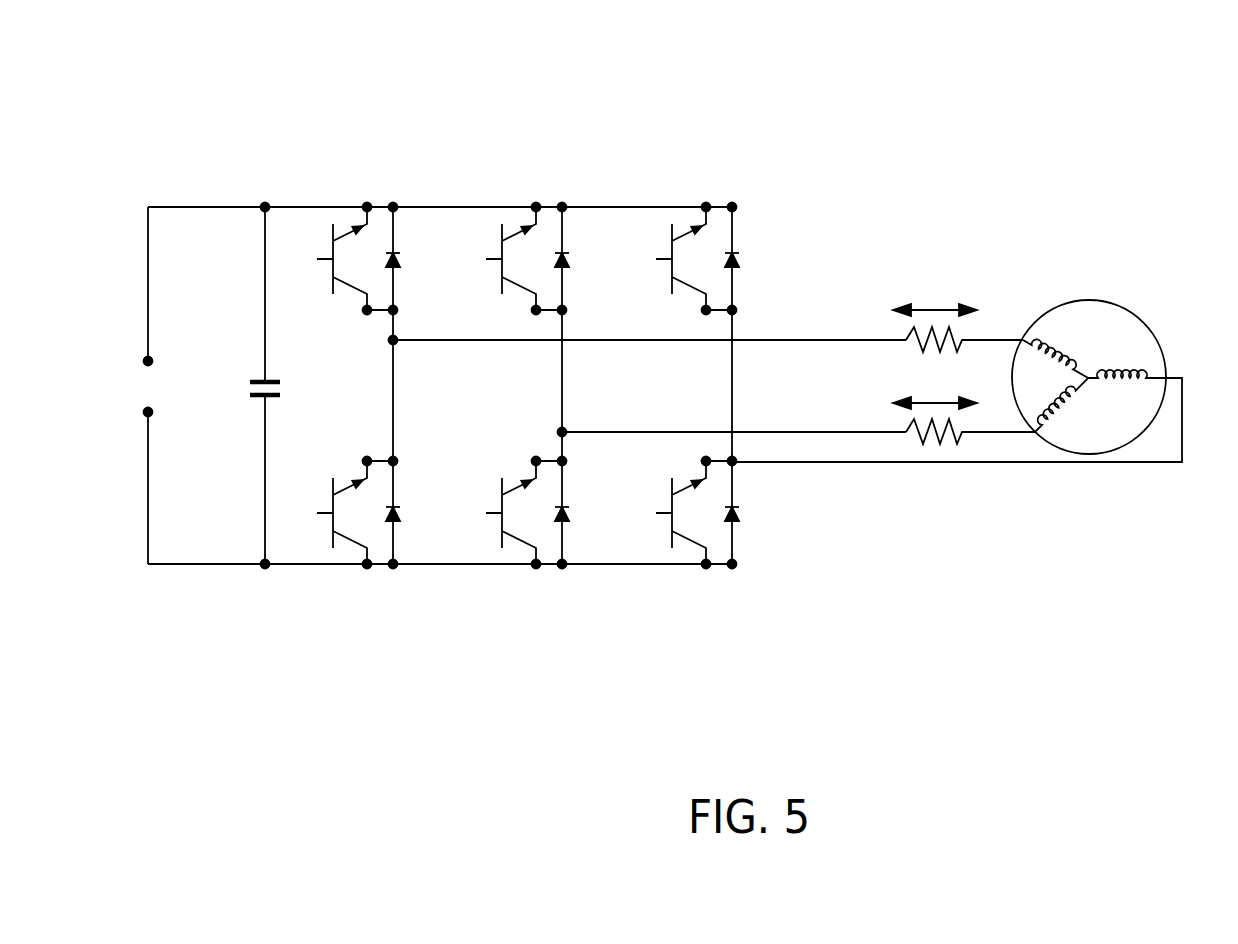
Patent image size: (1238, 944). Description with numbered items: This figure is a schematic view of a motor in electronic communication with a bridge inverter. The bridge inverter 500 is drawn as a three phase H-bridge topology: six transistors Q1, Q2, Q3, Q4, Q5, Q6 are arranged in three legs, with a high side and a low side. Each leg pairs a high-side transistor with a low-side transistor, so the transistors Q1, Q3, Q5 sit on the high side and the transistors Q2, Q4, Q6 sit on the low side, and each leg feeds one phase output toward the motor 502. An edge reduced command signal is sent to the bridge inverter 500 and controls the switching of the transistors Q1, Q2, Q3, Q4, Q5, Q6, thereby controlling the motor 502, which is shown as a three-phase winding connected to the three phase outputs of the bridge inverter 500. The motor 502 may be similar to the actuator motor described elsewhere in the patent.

The bridge inverter 500 is at (666, 107).
The motor 502 is at (1105, 300).
The transistor Q1 is at (343, 259).
The transistor Q2 is at (343, 513).
The transistor Q3 is at (512, 259).
The transistor Q4 is at (512, 513).
The transistor Q5 is at (682, 259).
The transistor Q6 is at (682, 513).